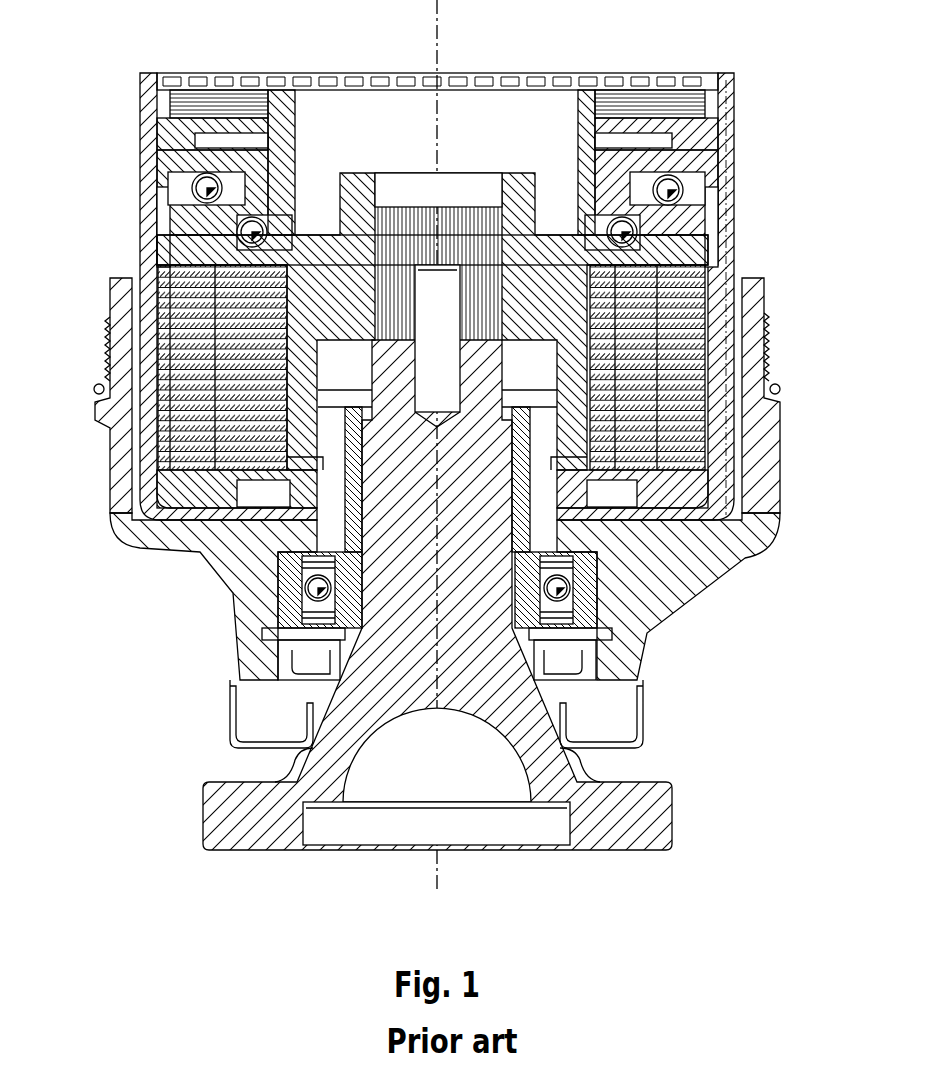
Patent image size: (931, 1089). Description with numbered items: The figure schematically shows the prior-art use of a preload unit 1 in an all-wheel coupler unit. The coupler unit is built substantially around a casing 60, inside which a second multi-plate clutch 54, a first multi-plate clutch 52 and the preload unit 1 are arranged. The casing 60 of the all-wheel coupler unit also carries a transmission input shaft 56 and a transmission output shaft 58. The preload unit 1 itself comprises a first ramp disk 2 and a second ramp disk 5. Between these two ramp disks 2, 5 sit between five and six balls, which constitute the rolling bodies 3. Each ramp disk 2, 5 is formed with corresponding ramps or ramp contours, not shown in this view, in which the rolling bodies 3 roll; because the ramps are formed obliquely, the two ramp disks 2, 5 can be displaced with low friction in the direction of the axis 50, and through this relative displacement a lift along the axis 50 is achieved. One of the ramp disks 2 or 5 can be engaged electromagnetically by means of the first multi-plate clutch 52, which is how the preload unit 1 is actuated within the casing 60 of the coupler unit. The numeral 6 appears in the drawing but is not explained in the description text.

The preload unit 1 is at (740, 68).
The first ramp disk 2 is at (697, 253).
The rolling bodies 3 is at (592, 208).
The second ramp disk 5 is at (693, 214).
The ball bearing 6 is at (682, 180).
The axis 50 is at (446, 125).
The first multi-plate clutch 52 is at (184, 88).
The second multi-plate clutch 54 is at (160, 268).
The transmission input shaft 56 is at (495, 822).
The transmission output shaft 58 is at (360, 190).
The casing 60 is at (710, 570).